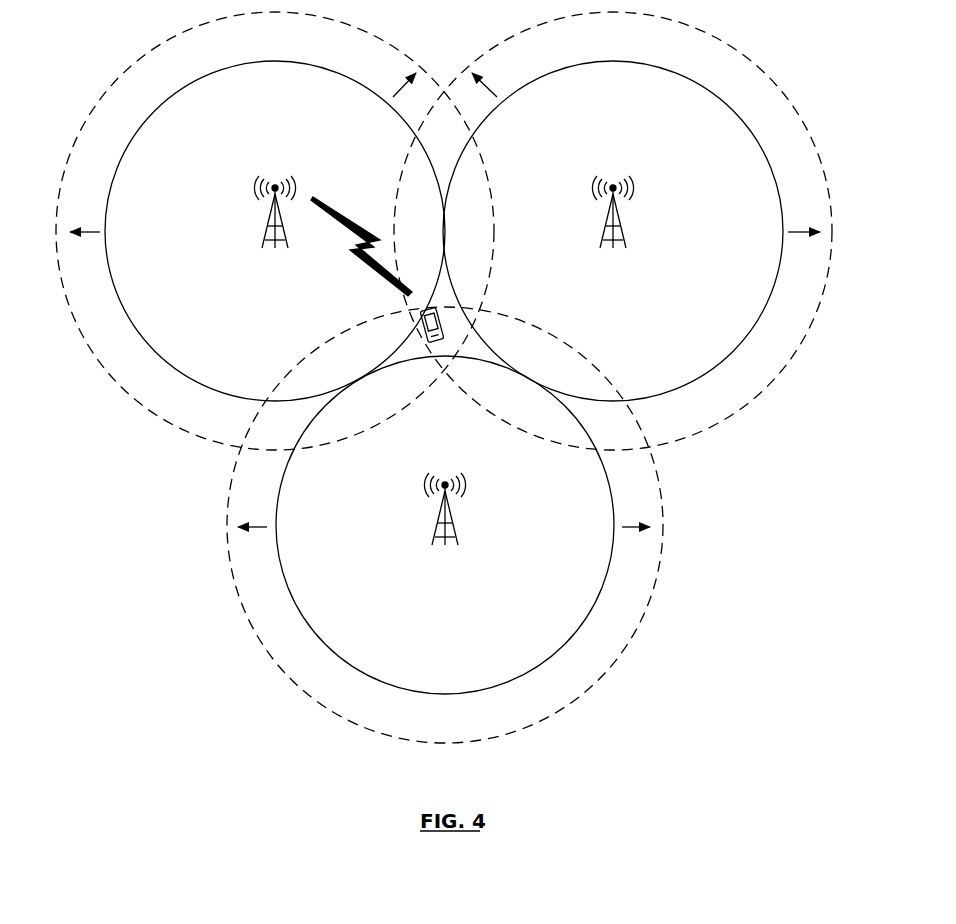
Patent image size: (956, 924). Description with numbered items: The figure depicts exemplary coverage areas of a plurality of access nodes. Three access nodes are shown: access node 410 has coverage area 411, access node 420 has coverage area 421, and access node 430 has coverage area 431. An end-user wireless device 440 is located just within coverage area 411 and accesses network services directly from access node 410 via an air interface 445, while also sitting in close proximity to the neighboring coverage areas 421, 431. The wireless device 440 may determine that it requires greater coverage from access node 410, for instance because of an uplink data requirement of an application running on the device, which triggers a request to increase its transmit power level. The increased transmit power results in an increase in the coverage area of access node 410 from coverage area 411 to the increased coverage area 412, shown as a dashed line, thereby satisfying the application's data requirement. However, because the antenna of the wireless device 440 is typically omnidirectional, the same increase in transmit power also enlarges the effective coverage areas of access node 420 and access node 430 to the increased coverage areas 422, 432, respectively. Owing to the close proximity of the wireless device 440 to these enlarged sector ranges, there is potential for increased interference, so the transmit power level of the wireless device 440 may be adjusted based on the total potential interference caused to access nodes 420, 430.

The access node 410 is at (267, 233).
The coverage area 411 is at (183, 372).
The increased coverage area 412 is at (153, 412).
The access node 420 is at (602, 232).
The coverage area 421 is at (715, 367).
The increased coverage area 422 is at (750, 403).
The access node 430 is at (425, 528).
The coverage area 431 is at (278, 493).
The increased coverage area 432 is at (225, 500).
The end-user wireless device 440 is at (425, 343).
The air interface 445 is at (372, 268).